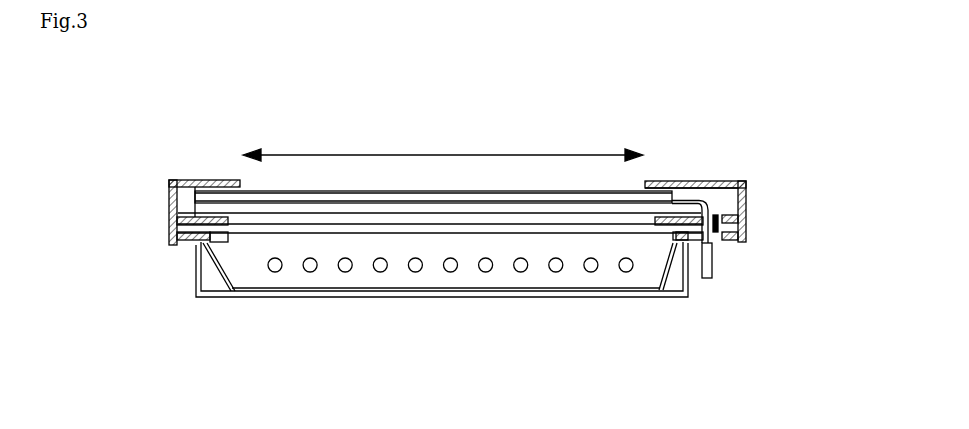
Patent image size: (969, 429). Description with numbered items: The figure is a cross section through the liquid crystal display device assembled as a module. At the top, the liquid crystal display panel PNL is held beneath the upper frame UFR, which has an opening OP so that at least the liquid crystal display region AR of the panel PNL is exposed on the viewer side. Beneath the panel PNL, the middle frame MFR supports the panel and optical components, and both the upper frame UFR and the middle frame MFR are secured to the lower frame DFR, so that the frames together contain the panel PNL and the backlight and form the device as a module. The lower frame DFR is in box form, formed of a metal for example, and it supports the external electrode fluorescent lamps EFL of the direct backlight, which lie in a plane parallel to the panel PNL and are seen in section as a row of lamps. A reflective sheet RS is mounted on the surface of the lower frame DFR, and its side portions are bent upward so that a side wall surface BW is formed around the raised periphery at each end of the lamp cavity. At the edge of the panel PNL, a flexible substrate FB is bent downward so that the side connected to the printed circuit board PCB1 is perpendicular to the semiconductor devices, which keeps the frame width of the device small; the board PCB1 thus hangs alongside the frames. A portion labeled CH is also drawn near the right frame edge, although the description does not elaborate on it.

The upper frame UFR is at (200, 180).
The liquid crystal display panel PNL is at (397, 191).
The liquid crystal display region AR is at (443, 143).
The opening OP is at (645, 182).
The flexible substrate FB is at (747, 191).
The channel / hook portion CH is at (745, 220).
The middle frame MFR is at (200, 234).
The printed circuit board PCB1 is at (712, 268).
The lower frame DFR is at (355, 298).
The reflective sheet RS is at (432, 290).
The side wall surface BW is at (220, 263).
The external electrode fluorescent lamp EFL is at (530, 272).